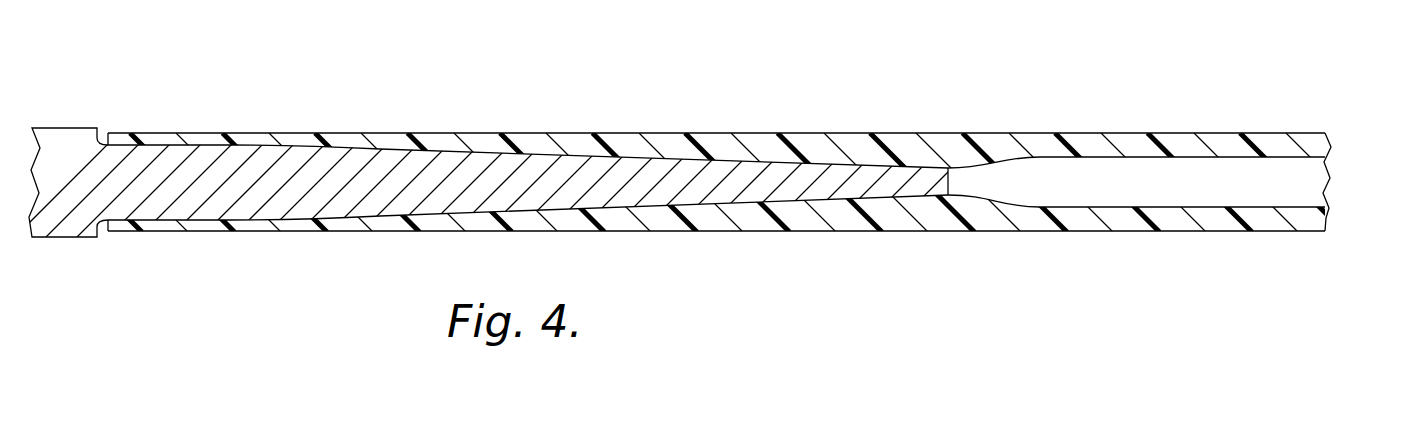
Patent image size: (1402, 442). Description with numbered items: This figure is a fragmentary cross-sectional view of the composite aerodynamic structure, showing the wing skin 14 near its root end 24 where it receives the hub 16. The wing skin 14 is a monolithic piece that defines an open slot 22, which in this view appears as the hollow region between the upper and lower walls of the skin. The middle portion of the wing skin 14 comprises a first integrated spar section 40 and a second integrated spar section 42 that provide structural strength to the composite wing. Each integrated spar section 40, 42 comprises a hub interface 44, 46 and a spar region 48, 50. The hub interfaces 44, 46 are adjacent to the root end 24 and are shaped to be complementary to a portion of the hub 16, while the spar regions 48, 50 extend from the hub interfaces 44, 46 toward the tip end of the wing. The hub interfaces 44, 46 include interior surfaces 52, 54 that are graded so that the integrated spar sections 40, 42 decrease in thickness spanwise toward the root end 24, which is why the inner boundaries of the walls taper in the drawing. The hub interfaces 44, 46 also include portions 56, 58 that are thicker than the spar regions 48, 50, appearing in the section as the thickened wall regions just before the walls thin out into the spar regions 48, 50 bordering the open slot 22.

The wing skin 14 is at (1177, 122).
The hub 16 is at (52, 126).
The open slot 22 is at (1290, 180).
The root end 24 is at (193, 137).
The first integrated spar section 40 is at (1065, 135).
The second integrated spar section 42 is at (1167, 226).
The hub interface 44 is at (777, 140).
The hub interface 46 is at (840, 212).
The spar region 48 is at (1263, 152).
The spar region 50 is at (1242, 220).
The interior surface 52 is at (575, 155).
The interior surface 54 is at (677, 212).
The thicker portion 56 is at (918, 158).
The thicker portion 58 is at (940, 210).